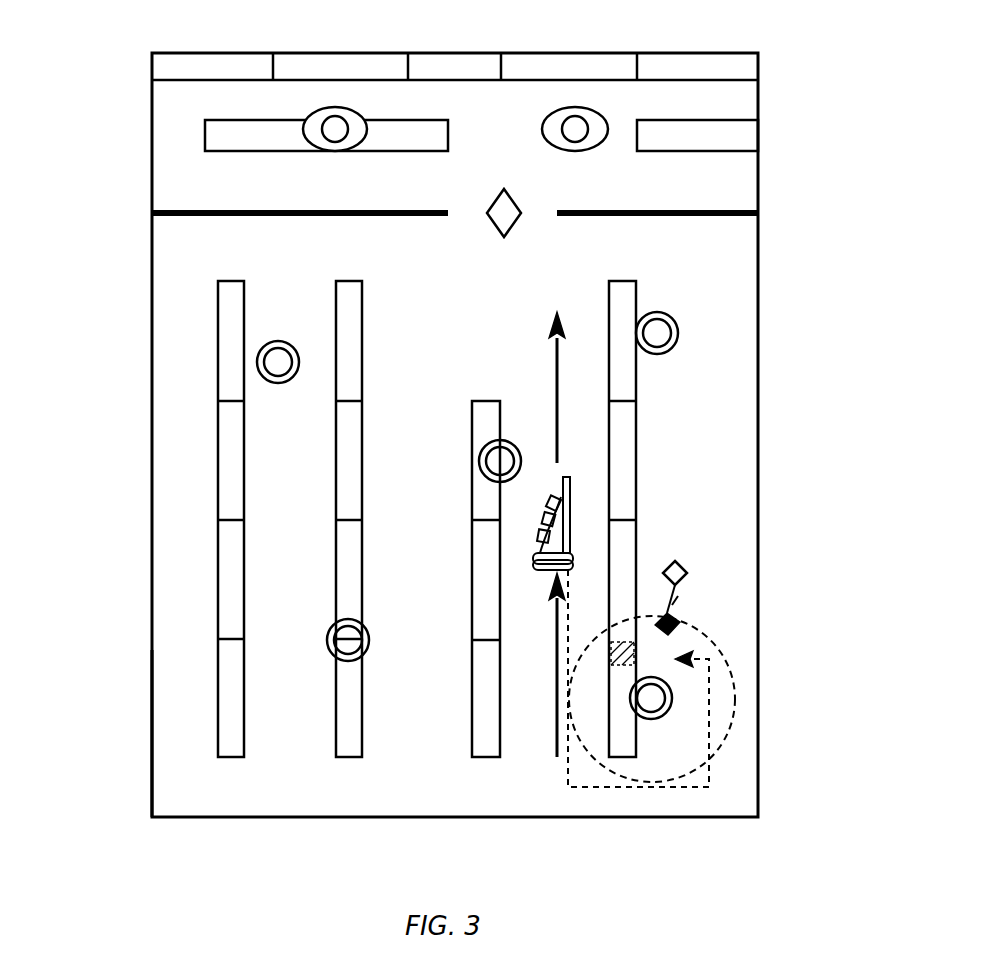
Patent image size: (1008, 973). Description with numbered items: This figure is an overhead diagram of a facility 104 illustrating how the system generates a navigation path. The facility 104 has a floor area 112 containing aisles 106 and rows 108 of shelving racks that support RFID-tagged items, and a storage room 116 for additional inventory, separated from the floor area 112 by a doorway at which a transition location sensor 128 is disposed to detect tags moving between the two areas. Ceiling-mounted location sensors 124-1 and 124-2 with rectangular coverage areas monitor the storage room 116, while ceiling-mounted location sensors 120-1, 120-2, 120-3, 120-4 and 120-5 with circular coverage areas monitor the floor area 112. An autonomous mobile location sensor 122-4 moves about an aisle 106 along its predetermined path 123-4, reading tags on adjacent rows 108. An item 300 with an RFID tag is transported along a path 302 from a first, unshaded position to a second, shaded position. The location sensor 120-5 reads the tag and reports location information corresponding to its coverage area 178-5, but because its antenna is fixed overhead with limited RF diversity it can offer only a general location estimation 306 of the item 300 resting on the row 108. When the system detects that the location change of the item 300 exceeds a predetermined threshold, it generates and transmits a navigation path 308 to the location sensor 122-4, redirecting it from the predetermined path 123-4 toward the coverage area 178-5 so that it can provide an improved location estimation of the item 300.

The facility 104 is at (760, 305).
The aisle 106 is at (167, 730).
The row 108 is at (231, 758).
The floor area 112 is at (748, 412).
The storage room 116 is at (748, 180).
The location sensor 120-1 is at (285, 341).
The location sensor 120-2 is at (678, 333).
The location sensor 120-3 is at (485, 448).
The location sensor 120-4 is at (327, 640).
The location sensor 120-5 is at (672, 698).
The location sensor 122-4 is at (540, 538).
The predetermined path 123-4 is at (557, 605).
The location sensor 124-1 is at (330, 107).
The location sensor 124-2 is at (570, 107).
The transition location sensor 128 is at (492, 228).
The coverage area 178-5 is at (587, 750).
The item 300 is at (678, 561).
The path 302 is at (685, 598).
The general location estimation 306 is at (611, 650).
The navigation path 308 is at (709, 772).